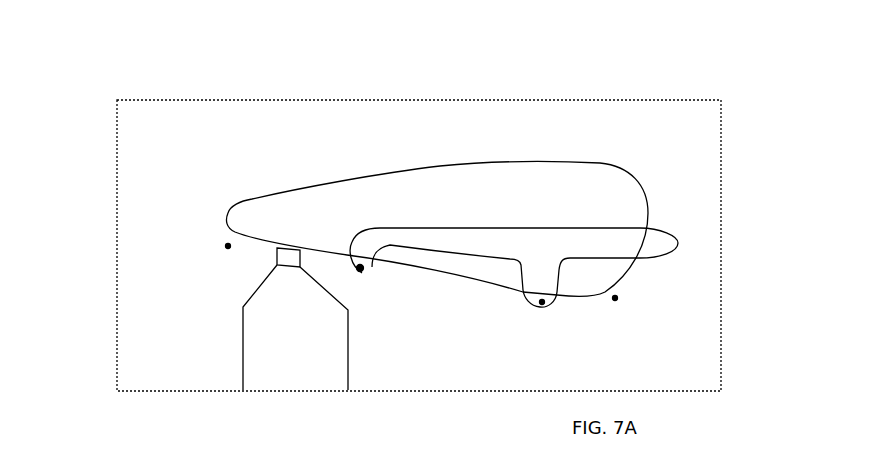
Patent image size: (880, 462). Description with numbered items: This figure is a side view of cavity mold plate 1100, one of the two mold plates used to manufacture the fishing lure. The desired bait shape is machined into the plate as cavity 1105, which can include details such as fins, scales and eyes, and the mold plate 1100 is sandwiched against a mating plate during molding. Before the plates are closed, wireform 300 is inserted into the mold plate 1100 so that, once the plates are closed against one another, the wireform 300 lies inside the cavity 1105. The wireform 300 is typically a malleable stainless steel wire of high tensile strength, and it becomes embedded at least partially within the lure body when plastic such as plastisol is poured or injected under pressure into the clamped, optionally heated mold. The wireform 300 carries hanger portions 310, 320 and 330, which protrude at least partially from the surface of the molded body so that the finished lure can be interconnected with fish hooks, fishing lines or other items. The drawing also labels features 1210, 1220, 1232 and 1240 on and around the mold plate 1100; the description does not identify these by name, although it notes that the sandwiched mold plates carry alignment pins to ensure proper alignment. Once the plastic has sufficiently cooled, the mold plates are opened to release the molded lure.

The cavity mold plate 1100 is at (357, 130).
The cavity 1105 is at (395, 195).
The wireform 300 is at (450, 226).
The hanger portion 310 is at (678, 243).
The hanger portion 320 is at (553, 307).
The hanger portion 330 is at (363, 268).
The rear support 1210 is at (615, 298).
The middle support 1220 is at (538, 304).
The pedestal 1232 is at (360, 270).
The front support 1240 is at (222, 248).